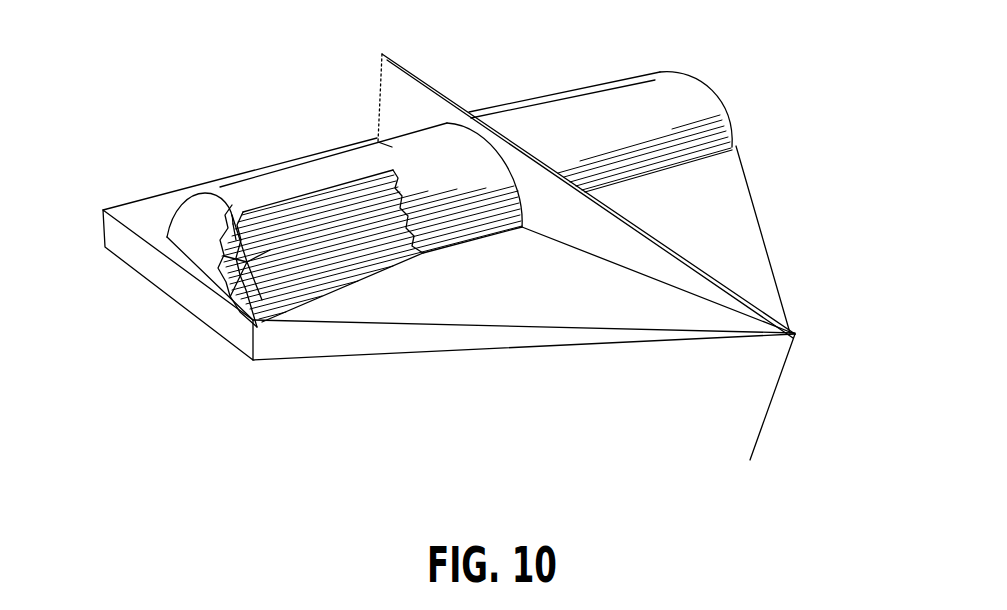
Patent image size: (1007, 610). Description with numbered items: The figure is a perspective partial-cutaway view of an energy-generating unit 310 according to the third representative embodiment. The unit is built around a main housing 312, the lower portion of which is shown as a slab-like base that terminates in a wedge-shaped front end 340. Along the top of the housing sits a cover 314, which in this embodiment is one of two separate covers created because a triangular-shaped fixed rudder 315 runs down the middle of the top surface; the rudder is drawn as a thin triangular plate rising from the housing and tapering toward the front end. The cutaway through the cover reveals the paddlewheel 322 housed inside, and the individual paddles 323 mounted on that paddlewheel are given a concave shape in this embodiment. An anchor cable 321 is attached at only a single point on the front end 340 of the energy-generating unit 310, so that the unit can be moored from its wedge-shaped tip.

The energy-generating unit 310 is at (771, 98).
The main housing 312 is at (138, 218).
The cover 314 is at (637, 97).
The fixed rudder 315 is at (398, 98).
The anchor cable 321 is at (760, 433).
The paddlewheel 322 is at (273, 253).
The paddles 323 is at (362, 200).
The front end 340 is at (705, 322).